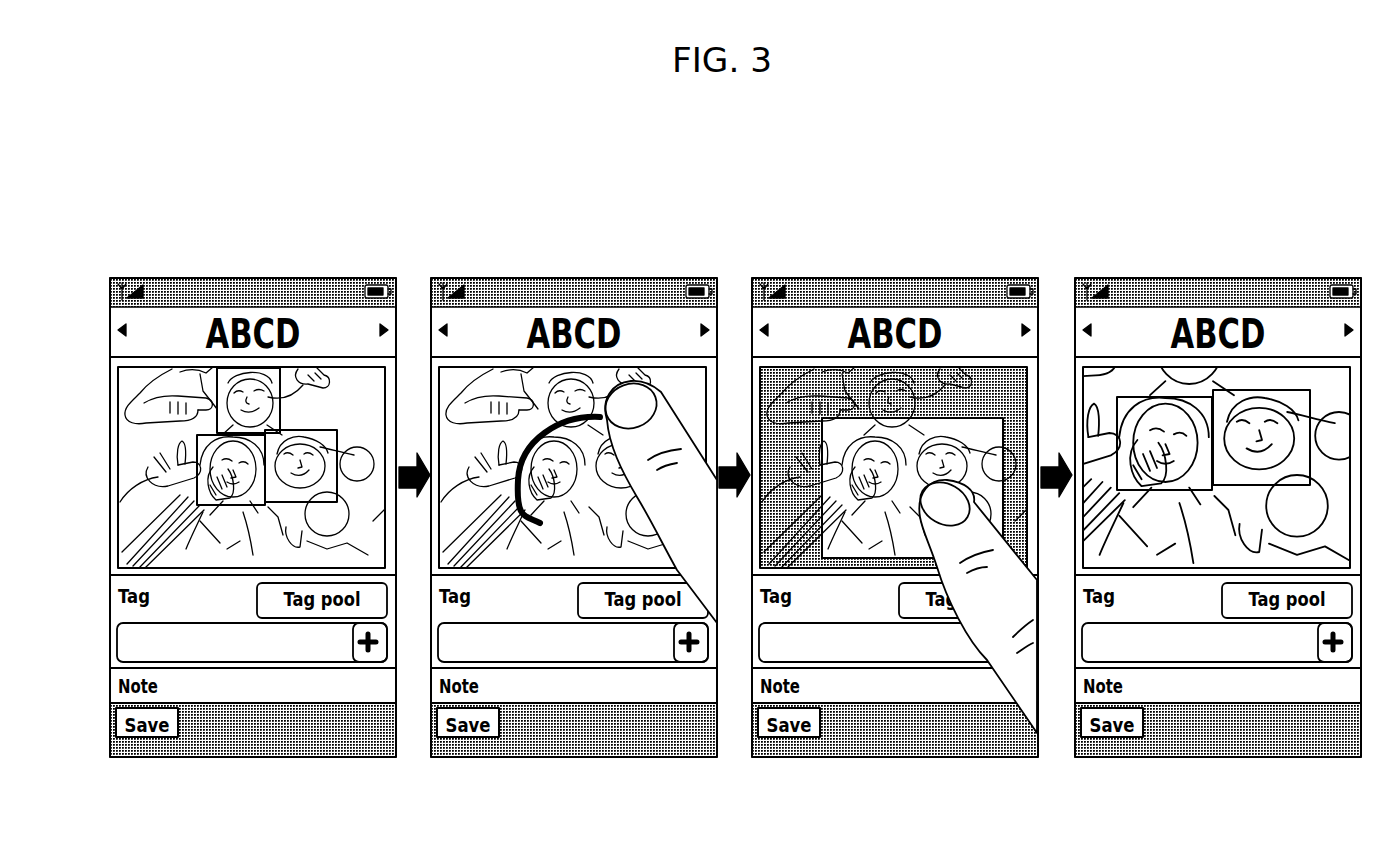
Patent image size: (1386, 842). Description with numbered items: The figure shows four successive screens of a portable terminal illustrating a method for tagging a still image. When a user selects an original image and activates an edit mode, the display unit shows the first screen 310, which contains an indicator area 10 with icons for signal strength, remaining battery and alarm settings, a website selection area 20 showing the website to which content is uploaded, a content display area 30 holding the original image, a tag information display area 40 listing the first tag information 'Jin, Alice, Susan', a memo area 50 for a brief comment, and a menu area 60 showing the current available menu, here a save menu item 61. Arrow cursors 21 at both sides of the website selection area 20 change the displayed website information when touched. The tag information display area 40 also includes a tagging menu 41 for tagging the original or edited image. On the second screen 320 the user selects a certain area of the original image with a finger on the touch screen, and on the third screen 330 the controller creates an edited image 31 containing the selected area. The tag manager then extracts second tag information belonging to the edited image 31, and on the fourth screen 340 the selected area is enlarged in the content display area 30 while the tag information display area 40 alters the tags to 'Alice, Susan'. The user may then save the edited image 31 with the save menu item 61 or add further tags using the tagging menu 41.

The indicator area 10 is at (230, 292).
The website selection area 20 is at (230, 296).
The arrow cursors 21 is at (253, 286).
The content display area 30 is at (224, 465).
The edited image 31 is at (912, 394).
The tag information display area 40 is at (230, 692).
The tagging menu 41 is at (370, 716).
The memo area 50 is at (230, 685).
The menu area 60 is at (230, 756).
The save menu item 61 is at (147, 759).
The first screen 310 is at (146, 278).
The second screen 320 is at (574, 492).
The third screen 330 is at (895, 492).
The fourth screen 340 is at (1192, 492).